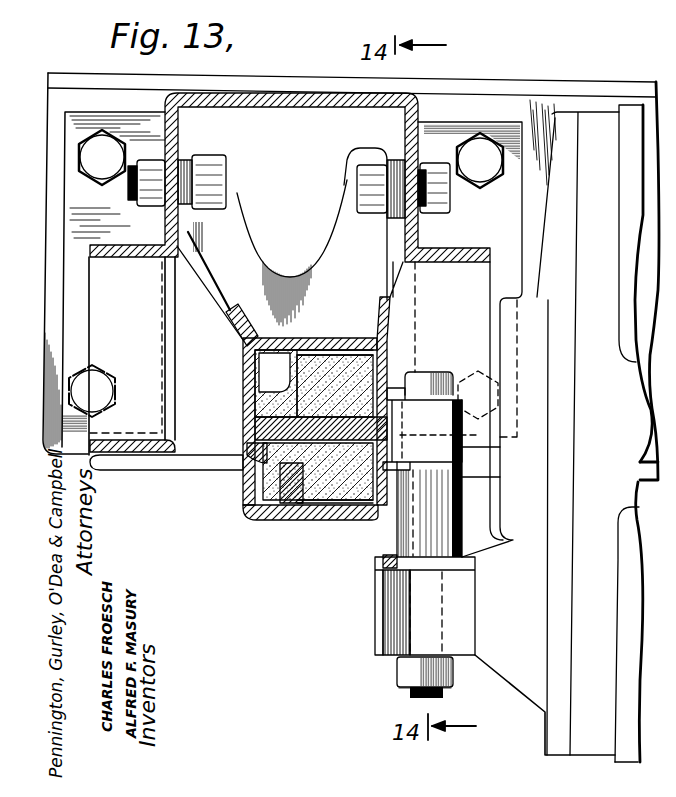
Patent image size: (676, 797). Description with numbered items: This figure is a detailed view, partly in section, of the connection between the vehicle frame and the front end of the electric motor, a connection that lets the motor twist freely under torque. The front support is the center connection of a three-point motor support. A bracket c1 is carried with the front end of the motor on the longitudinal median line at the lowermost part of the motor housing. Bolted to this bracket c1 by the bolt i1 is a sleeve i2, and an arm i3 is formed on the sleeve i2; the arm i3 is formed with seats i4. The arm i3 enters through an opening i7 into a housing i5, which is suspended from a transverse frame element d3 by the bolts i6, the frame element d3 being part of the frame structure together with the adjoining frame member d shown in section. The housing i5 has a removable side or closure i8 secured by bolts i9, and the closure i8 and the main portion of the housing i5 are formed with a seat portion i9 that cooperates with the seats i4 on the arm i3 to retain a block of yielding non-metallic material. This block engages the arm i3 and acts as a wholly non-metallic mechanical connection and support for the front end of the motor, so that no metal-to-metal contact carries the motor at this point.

The transverse frame element d3 is at (290, 107).
The cross member bracket d is at (216, 472).
The bolts i6 is at (210, 203).
The housing i5 is at (243, 393).
The seats i4 is at (378, 367).
The arm i3 is at (257, 423).
The closure i8 is at (310, 520).
The seat portion i9 is at (336, 350).
The opening i7 is at (388, 478).
The sleeve i2 is at (397, 537).
The bolt i1 is at (442, 692).
The bracket c1 is at (513, 650).